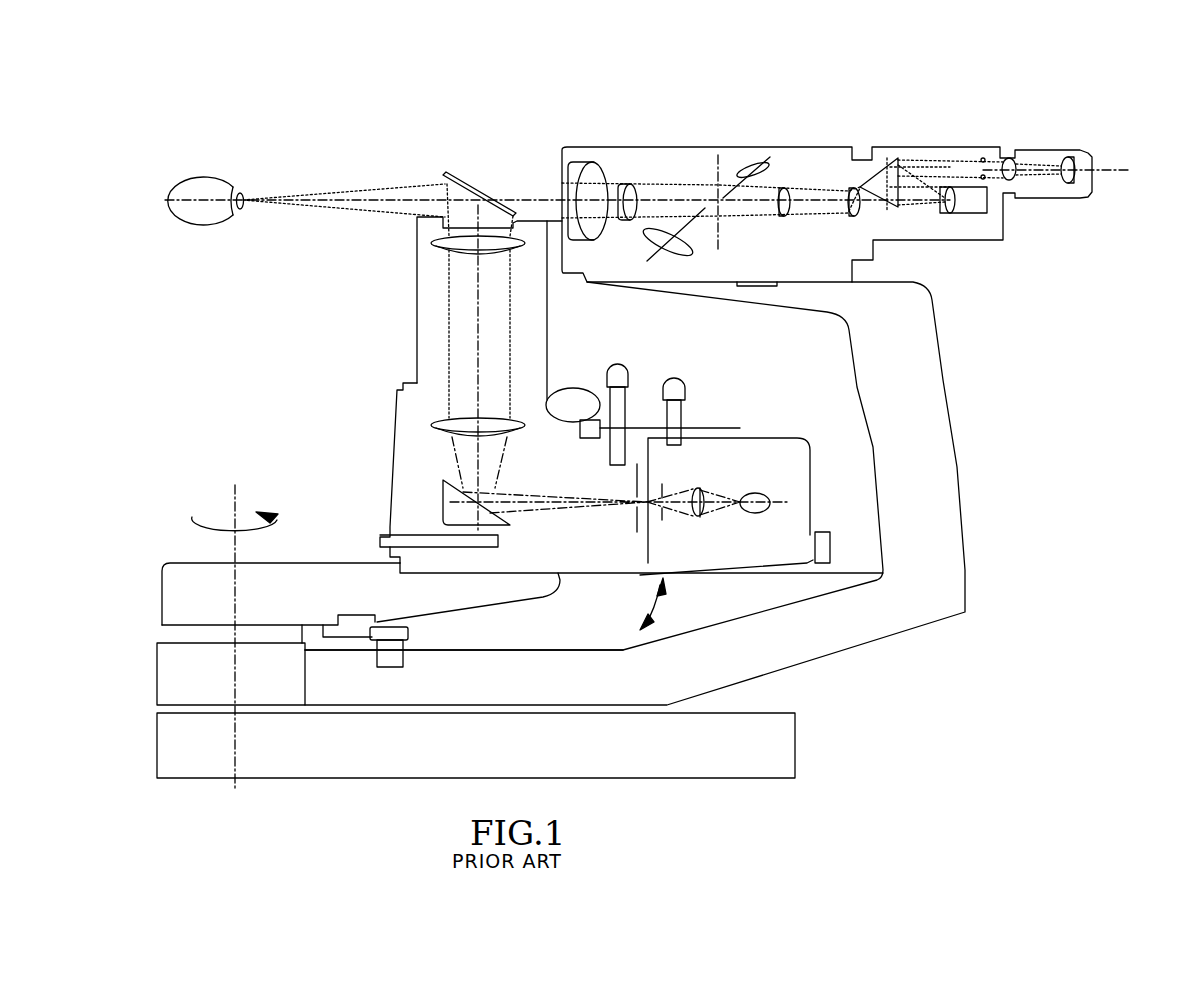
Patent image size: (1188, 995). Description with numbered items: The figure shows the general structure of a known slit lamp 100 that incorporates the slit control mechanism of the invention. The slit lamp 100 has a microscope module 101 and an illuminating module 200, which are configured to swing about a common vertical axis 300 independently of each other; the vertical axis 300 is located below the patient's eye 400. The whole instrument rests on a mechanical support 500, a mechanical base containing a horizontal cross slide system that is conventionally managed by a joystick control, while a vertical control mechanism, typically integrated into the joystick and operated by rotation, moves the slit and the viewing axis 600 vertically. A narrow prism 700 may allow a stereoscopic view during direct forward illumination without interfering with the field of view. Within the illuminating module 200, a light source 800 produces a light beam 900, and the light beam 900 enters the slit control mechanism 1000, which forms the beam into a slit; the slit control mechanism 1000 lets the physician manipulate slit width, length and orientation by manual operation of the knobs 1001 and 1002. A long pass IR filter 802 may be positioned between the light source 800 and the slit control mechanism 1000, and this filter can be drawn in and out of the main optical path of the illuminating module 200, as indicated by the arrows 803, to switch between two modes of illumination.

The slit lamp 100 is at (630, 50).
The microscope module 101 is at (917, 145).
The illuminating module 200 is at (415, 293).
The vertical axis 300 is at (390, 621).
The patient's eye 400 is at (178, 173).
The mechanical support 500 is at (773, 745).
The viewing axis 600 is at (1117, 170).
The prism 700 is at (460, 172).
The light source 800 is at (765, 493).
The long pass IR filter 802 is at (650, 505).
The arrows 803 is at (640, 601).
The light beam 900 is at (672, 490).
The slit control mechanism 1000 is at (676, 528).
The knob 1001 is at (680, 370).
The knob 1002 is at (633, 362).